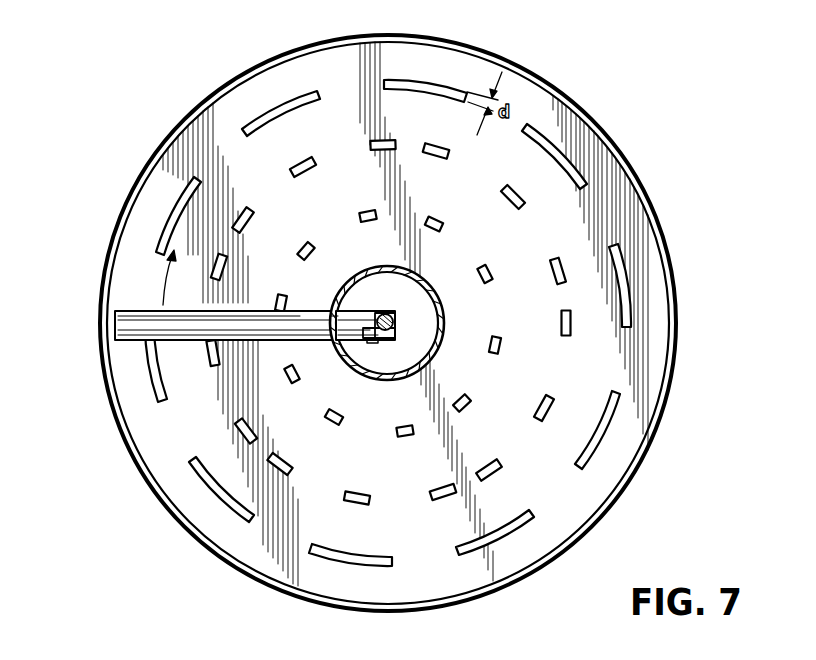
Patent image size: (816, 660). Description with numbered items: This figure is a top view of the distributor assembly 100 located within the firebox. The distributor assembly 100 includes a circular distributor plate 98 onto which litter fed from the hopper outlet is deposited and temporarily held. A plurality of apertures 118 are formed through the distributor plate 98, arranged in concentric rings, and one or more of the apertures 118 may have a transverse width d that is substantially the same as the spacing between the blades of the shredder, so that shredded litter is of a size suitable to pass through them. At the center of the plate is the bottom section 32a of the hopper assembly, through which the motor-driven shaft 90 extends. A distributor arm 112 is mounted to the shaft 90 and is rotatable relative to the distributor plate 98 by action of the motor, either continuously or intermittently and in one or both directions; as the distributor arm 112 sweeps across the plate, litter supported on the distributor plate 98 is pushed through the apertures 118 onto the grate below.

The distributor assembly 100 is at (668, 206).
The distributor plate 98 is at (256, 90).
The apertures 118 is at (180, 462).
The distributor arm 112 is at (141, 316).
The bottom section of the hopper assembly 32a is at (373, 383).
The shaft 90 is at (394, 320).